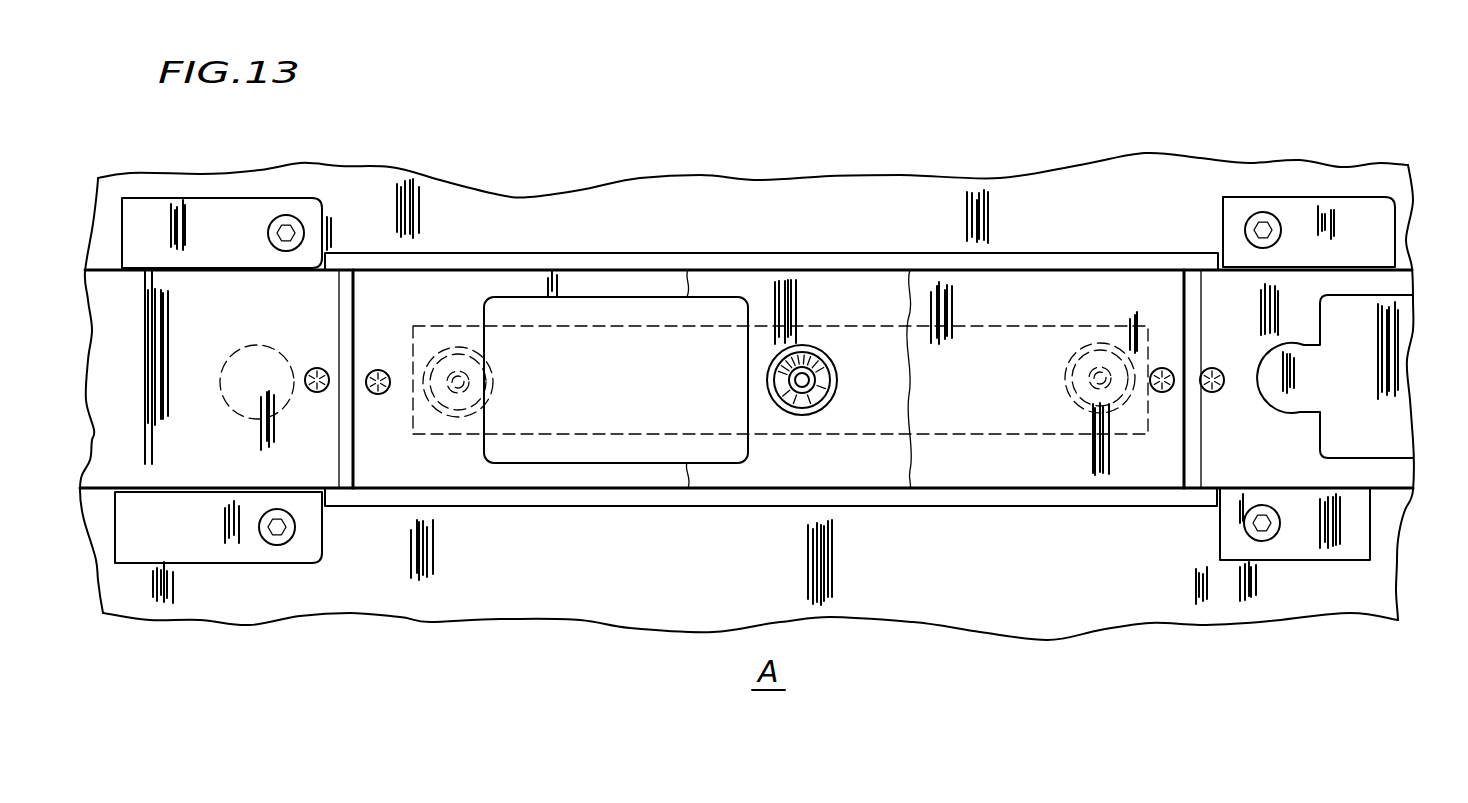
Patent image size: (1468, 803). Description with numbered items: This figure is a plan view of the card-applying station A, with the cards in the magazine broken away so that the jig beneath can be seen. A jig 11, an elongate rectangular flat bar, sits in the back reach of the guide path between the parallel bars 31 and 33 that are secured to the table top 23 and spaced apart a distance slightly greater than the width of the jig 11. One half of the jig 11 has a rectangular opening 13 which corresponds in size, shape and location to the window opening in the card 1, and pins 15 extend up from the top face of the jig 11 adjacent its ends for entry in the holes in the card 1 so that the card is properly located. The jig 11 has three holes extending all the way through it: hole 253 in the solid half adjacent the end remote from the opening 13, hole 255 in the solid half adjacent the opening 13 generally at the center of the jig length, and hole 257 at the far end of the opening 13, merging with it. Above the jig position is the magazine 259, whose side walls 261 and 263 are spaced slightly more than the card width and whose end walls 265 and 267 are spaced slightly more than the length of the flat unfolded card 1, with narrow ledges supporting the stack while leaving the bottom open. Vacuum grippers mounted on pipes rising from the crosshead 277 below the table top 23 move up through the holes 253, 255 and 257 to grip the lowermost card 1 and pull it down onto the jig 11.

The card 1 is at (112, 447).
The jig 11 is at (125, 340).
The rectangular opening 13 is at (612, 452).
The pins 15 is at (317, 394).
The table top 23 is at (990, 612).
The bar 31 is at (305, 198).
The bar 33 is at (200, 566).
The hole 253 is at (1068, 372).
The hole 255 is at (825, 400).
The hole 257 is at (438, 355).
The magazine 259 is at (1064, 246).
The side wall 261 is at (870, 495).
The side wall 263 is at (870, 262).
The end wall 265 is at (338, 318).
The end wall 267 is at (1187, 433).
The crosshead 277 is at (545, 437).